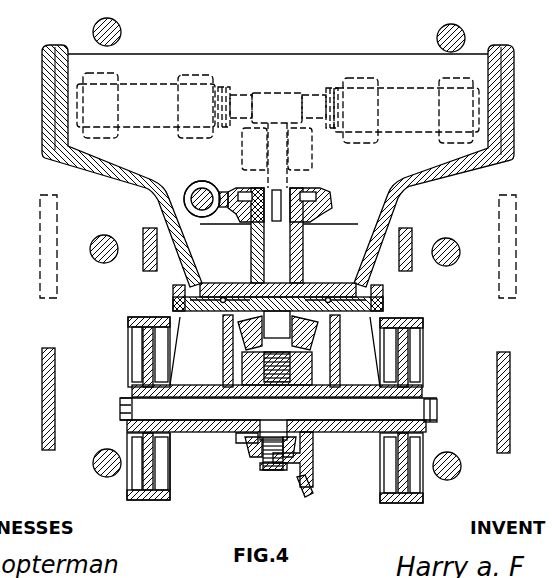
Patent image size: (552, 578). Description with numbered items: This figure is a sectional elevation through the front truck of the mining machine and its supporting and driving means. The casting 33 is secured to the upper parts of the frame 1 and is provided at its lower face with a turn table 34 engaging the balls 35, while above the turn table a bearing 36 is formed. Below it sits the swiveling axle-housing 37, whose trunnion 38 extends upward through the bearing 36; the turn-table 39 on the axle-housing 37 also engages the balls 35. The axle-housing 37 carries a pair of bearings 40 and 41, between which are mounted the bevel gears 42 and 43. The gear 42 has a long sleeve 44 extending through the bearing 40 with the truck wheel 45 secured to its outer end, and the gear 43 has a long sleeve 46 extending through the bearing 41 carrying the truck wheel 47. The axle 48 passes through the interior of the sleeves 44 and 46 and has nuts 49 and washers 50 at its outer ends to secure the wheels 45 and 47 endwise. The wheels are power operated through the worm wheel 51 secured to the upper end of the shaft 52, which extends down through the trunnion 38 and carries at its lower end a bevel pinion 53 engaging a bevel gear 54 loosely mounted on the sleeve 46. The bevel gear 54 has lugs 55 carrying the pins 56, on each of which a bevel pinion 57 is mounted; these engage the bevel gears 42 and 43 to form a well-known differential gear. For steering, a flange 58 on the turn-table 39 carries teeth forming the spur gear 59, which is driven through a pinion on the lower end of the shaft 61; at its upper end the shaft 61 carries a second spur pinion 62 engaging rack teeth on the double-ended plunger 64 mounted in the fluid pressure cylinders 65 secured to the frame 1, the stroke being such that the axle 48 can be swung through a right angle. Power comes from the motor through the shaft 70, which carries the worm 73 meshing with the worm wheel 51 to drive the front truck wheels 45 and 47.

The frame 1 is at (42, 84).
The casting 33 is at (278, 108).
The turn table 34 is at (310, 286).
The balls 35 is at (328, 295).
The bearing 36 is at (251, 254).
The swiveling axle-housing 37 is at (223, 342).
The trunnion 38 is at (305, 224).
The turn-table 39 is at (336, 314).
The bearing 40 is at (172, 388).
The bearing 41 is at (350, 393).
The bevel gear 42 is at (268, 438).
The bevel gear 43 is at (313, 458).
The long sleeve 44 is at (204, 433).
The truck wheel 45 is at (135, 359).
The long sleeve 46 is at (386, 468).
The truck wheel 47 is at (412, 361).
The axle 48 is at (278, 410).
The nuts 49 is at (120, 403).
The washers 50 is at (133, 406).
The worm wheel 51 is at (308, 194).
The shaft 52 is at (278, 221).
The bevel pinion 53 is at (267, 313).
The bevel gear 54 is at (317, 344).
The lugs 55 is at (290, 470).
The pins 56 is at (273, 445).
The bevel pinion 57 is at (258, 455).
The flange 58 is at (378, 300).
The spur gear 59 is at (173, 298).
The shaft 61 is at (268, 188).
The second spur pinion 62 is at (276, 94).
The double-ended plunger 64 is at (315, 106).
The fluid pressure cylinders 65 is at (138, 107).
The shaft 70 is at (190, 204).
The worm 73 is at (190, 193).